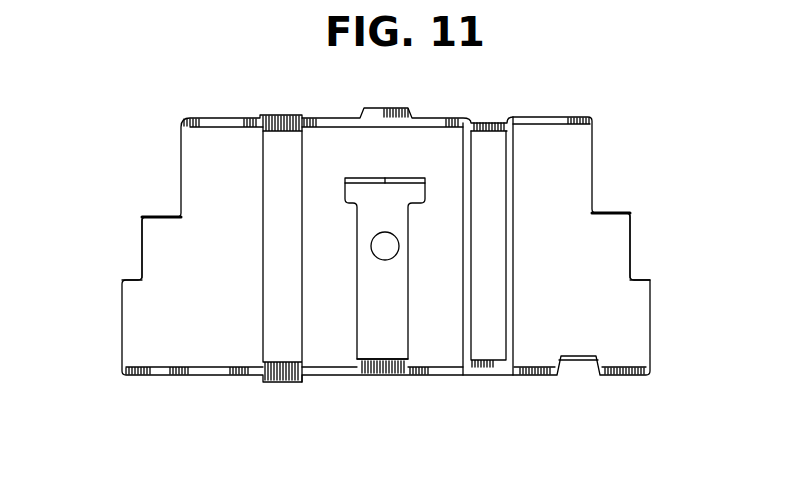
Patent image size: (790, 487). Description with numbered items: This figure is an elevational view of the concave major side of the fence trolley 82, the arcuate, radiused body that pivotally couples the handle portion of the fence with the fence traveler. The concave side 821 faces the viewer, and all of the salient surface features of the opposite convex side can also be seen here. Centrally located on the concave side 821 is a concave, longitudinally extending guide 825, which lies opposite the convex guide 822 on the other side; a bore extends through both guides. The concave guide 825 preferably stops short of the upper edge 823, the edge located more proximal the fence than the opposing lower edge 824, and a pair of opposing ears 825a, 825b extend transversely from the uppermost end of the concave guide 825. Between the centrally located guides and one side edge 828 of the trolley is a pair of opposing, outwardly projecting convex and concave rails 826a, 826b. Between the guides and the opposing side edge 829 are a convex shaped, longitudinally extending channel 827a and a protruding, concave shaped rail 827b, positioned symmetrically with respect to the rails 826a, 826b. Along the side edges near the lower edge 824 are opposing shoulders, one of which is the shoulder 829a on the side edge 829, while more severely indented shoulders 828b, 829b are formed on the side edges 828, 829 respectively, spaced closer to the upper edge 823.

The fence trolley 82 is at (659, 121).
The concave side 821 is at (583, 317).
The convex guide 822 is at (406, 108).
The upper edge 823 is at (220, 118).
The lower edge 824 is at (150, 377).
The concave guide 825 is at (372, 285).
The ear 825a is at (352, 186).
The ear 825b is at (417, 187).
The convex rail 826a is at (284, 115).
The concave rail 826b is at (266, 168).
The convex shaped channel 827a is at (490, 122).
The concave shaped rail 827b is at (495, 150).
The side edge 828 is at (140, 245).
The indented shoulder 828b is at (158, 216).
The opposing side edge 829 is at (630, 228).
The shoulder 829a is at (128, 278).
The indented shoulder 829b is at (612, 212).